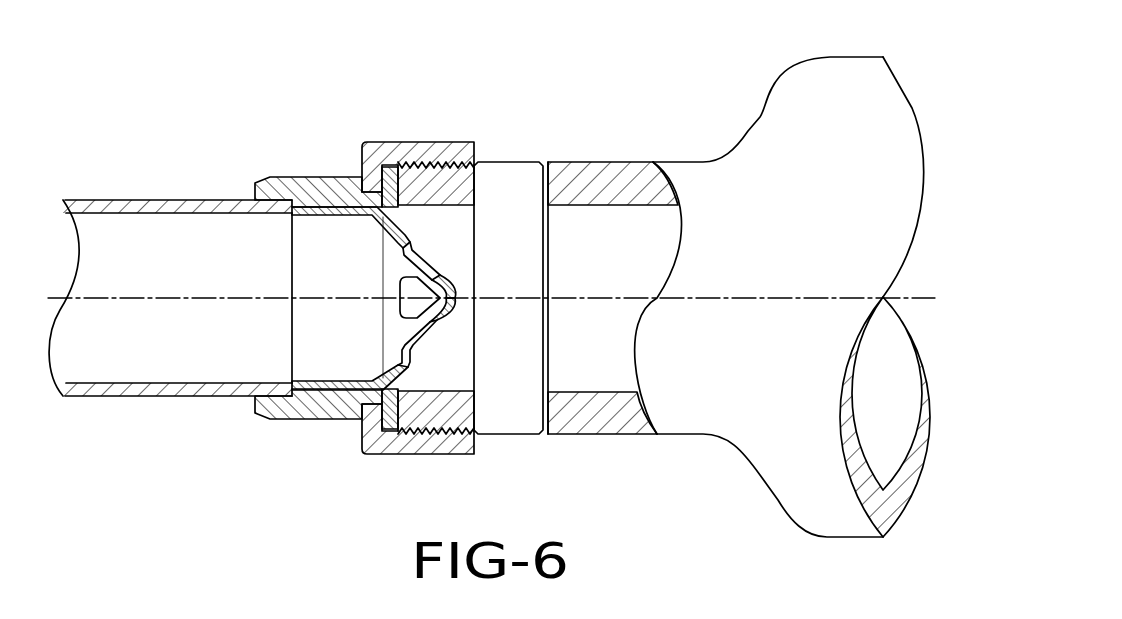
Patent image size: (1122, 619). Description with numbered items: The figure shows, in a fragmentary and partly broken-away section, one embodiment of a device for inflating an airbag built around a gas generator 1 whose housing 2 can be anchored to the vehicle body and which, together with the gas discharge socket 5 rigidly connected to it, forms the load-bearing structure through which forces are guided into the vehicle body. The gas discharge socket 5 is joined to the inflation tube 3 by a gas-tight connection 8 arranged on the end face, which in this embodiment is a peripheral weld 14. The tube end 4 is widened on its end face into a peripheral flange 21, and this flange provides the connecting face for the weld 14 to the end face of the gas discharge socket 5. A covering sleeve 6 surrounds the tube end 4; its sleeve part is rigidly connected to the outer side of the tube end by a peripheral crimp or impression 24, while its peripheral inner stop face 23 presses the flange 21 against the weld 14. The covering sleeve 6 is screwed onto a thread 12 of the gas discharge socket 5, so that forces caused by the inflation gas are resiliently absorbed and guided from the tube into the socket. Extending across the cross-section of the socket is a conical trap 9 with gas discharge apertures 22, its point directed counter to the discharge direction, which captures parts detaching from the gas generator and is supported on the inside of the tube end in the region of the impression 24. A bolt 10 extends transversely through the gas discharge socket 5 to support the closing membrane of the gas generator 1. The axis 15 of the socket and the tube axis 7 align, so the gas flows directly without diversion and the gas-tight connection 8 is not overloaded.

The gas generator 1 is at (765, 75).
The housing 2 is at (847, 72).
The inflation tube 3 is at (117, 395).
The tube end 4 is at (347, 192).
The gas discharge socket 5 is at (585, 420).
The covering sleeve 6 is at (463, 450).
The tube axis 7 is at (155, 298).
The gas-tight connection 8 is at (399, 165).
The trap 9 is at (400, 366).
The bolt 10 is at (512, 187).
The thread 12 is at (443, 165).
The peripheral weld 14 is at (402, 410).
The axis 15 is at (732, 297).
The peripheral flange 21 is at (383, 415).
The gas discharge apertures 22 is at (423, 258).
The peripheral inner stop face 23 is at (394, 168).
The peripheral crimp or impression 24 is at (267, 182).